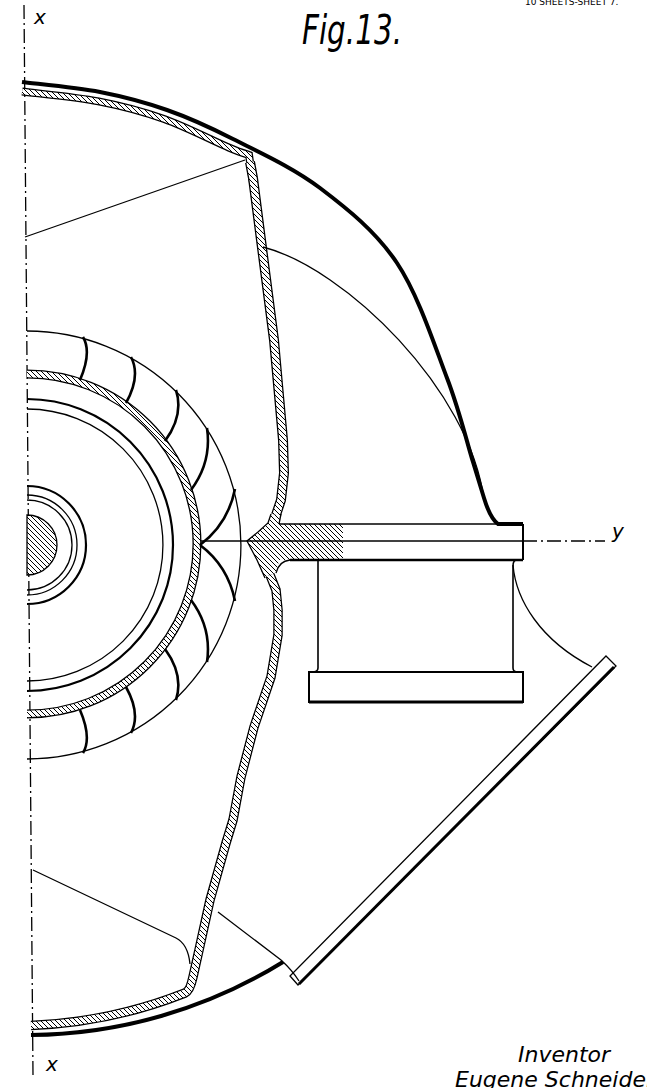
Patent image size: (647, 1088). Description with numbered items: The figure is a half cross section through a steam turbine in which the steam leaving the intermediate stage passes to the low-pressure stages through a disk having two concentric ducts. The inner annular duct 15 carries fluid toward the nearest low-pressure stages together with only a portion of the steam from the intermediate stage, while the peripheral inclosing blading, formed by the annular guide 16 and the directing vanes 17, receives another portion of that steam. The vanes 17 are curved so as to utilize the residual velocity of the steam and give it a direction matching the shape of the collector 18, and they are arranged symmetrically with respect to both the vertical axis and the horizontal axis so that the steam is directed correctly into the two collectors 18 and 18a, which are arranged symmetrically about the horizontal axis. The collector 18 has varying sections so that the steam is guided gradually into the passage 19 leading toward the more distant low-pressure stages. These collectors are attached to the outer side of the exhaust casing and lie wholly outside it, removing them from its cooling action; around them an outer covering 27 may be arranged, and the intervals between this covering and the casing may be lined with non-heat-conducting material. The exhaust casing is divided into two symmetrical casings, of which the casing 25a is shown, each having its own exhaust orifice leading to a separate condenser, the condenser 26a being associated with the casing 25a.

The inner annular duct 15 is at (143, 441).
The annular guide 16 is at (99, 388).
The directing vanes 17 is at (136, 381).
The collector 18 is at (283, 344).
The collector 18a is at (247, 793).
The passage 19 is at (118, 100).
The exhaust casing 25a is at (421, 388).
The condenser 26a is at (443, 837).
The outer covering 27 is at (302, 172).